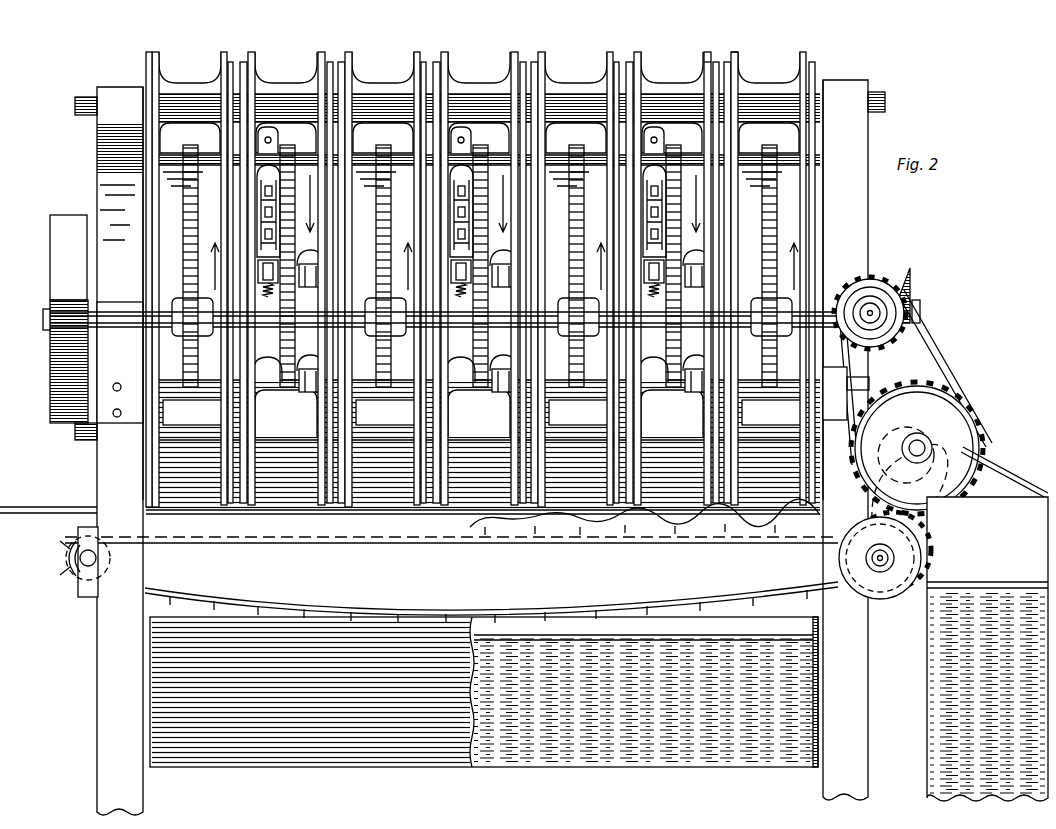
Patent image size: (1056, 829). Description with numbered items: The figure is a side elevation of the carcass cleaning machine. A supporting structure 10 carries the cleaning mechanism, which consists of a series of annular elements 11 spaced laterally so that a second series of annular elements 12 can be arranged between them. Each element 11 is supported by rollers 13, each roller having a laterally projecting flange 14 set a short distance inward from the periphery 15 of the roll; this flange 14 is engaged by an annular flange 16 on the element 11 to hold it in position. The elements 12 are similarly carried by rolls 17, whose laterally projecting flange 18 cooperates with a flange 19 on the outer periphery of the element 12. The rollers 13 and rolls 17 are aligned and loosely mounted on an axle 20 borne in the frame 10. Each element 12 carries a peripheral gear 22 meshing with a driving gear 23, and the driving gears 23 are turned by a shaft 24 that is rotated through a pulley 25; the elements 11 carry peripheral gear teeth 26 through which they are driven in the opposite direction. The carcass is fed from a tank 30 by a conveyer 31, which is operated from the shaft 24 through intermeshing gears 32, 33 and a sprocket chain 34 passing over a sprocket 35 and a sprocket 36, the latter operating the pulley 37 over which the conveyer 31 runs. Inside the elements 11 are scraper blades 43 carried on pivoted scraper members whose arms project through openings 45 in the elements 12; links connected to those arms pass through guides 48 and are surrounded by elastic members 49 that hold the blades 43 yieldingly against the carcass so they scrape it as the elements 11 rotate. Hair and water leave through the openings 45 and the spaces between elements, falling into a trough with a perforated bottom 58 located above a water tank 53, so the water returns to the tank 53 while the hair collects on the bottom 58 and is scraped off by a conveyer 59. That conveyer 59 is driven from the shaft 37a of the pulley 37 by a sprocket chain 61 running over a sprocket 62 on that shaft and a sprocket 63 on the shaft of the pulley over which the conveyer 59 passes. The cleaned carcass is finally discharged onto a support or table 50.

The supporting structure 10 is at (100, 177).
The annular elements 11 is at (830, 212).
The annular elements 12 is at (380, 216).
The rollers 13 is at (472, 85).
The laterally projecting flange 14 is at (745, 55).
The periphery 15 is at (705, 52).
The annular flange 16 is at (504, 232).
The rolls 17 is at (180, 90).
The laterally projecting flange 18 is at (152, 62).
The flange 19 is at (140, 195).
The axle 20 is at (75, 103).
The peripheral gear 22 is at (198, 212).
The driving gear 23 is at (185, 283).
The shaft 24 is at (43, 318).
The pulley 25 is at (52, 355).
The peripheral gear teeth 26 is at (685, 112).
The tank 30 is at (987, 649).
The conveyer 31 is at (988, 465).
The intermeshing gear 32 is at (903, 287).
The intermeshing gear 33 is at (882, 282).
The sprocket chain 34 is at (936, 357).
The sprocket 35 is at (918, 302).
The sprocket 36 is at (940, 390).
The pulley 37 is at (945, 427).
The shaft a is at (917, 438).
The scraper blades 43 is at (262, 193).
The opening 45 is at (470, 252).
The guide 48 is at (268, 137).
The elastic member 49 is at (262, 290).
The support or table 50 is at (22, 507).
The tank 53 is at (643, 762).
The perforated bottom 58 is at (655, 540).
The conveyer 59 is at (738, 540).
The sprocket chain 61 is at (928, 528).
The sprocket 62 is at (877, 562).
The sprocket 63 is at (890, 595).